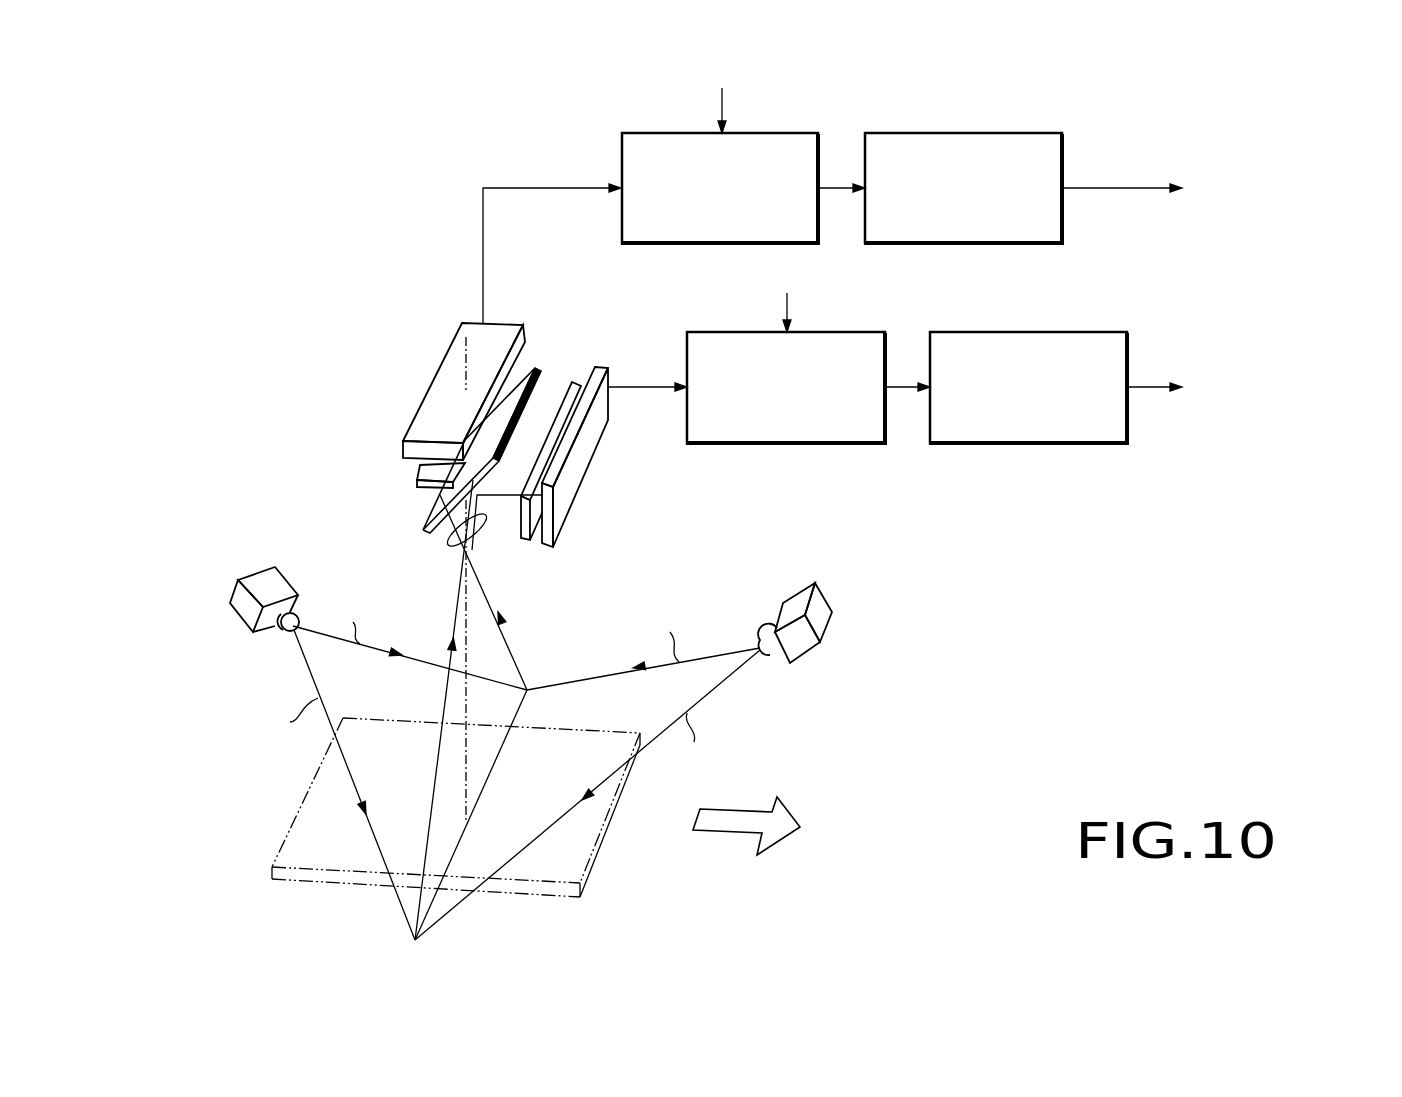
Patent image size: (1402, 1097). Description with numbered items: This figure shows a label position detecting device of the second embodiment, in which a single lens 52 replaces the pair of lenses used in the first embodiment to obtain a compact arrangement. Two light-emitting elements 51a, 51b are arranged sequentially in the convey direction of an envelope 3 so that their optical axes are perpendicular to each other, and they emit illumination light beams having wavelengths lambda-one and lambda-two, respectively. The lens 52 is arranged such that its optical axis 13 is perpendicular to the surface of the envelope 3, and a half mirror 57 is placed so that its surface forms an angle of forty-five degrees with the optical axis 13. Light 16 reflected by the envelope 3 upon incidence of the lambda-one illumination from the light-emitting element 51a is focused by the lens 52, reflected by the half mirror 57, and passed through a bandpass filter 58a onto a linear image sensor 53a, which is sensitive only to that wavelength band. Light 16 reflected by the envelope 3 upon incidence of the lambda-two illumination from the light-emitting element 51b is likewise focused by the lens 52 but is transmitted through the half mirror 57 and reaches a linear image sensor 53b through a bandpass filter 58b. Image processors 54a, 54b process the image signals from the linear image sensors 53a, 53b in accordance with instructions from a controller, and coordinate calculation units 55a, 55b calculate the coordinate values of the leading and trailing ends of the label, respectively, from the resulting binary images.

The envelope 3 is at (297, 808).
The optical axis 13 is at (470, 768).
The light 16 is at (509, 640).
The light-emitting element 51a is at (822, 606).
The light-emitting element 51b is at (270, 580).
The lens 52 is at (487, 532).
The linear image sensor 53a is at (590, 477).
The linear image sensor 53b is at (443, 380).
The image processor 54a is at (687, 360).
The image processor 54b is at (621, 157).
The coordinate calculation unit 55a is at (930, 360).
The coordinate calculation unit 55b is at (865, 157).
The half mirror 57 is at (464, 476).
The bandpass filter 58a is at (565, 388).
The bandpass filter 58b is at (420, 469).